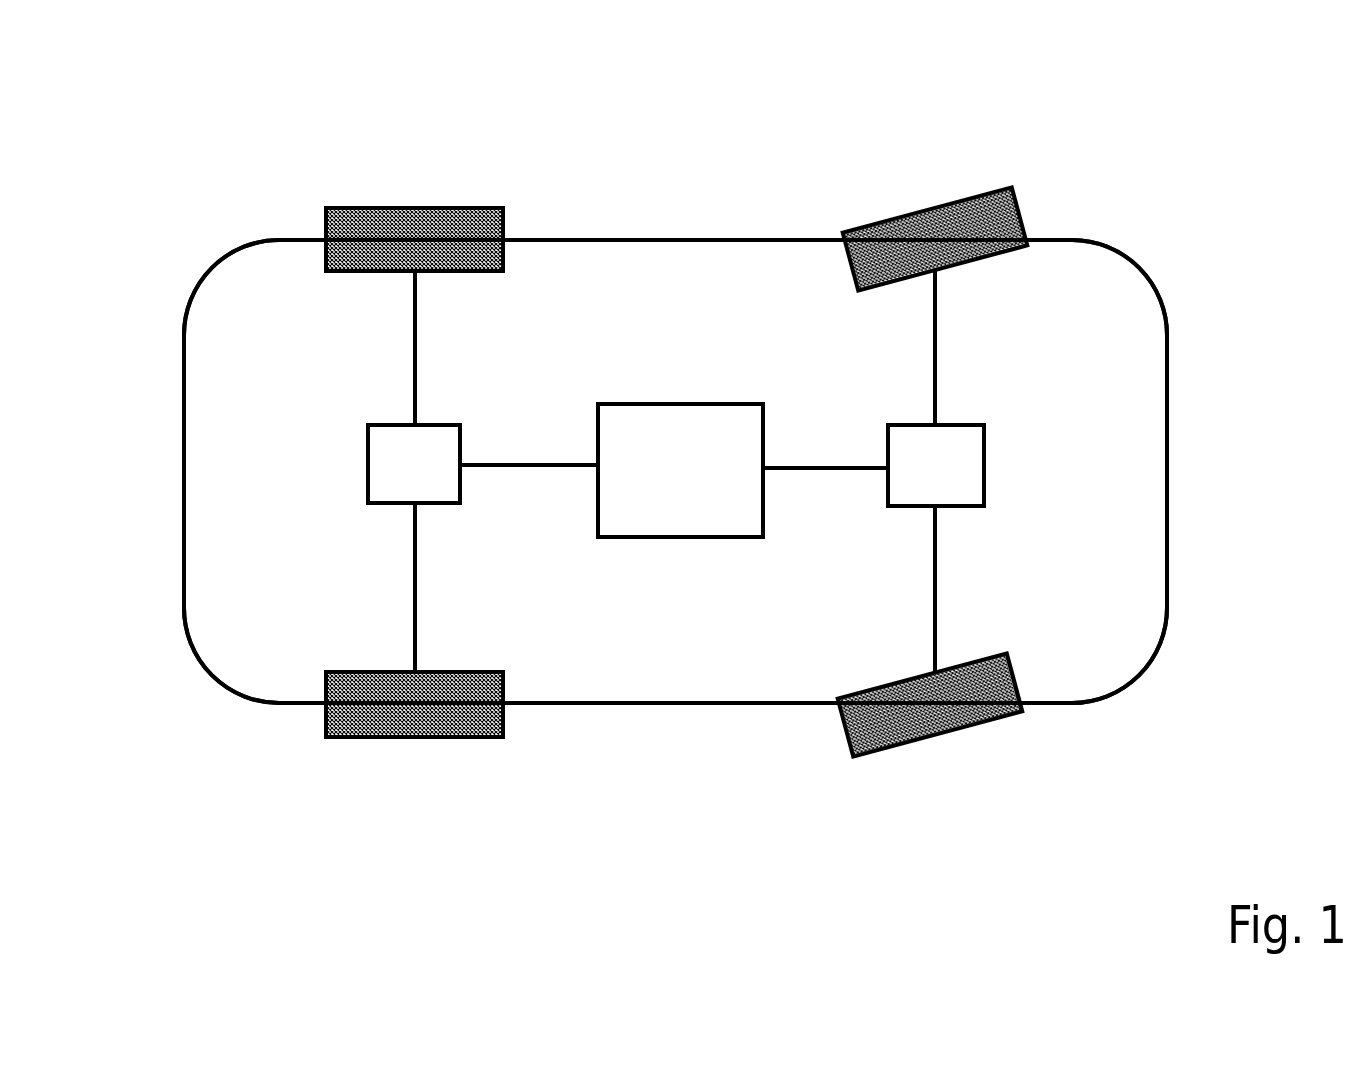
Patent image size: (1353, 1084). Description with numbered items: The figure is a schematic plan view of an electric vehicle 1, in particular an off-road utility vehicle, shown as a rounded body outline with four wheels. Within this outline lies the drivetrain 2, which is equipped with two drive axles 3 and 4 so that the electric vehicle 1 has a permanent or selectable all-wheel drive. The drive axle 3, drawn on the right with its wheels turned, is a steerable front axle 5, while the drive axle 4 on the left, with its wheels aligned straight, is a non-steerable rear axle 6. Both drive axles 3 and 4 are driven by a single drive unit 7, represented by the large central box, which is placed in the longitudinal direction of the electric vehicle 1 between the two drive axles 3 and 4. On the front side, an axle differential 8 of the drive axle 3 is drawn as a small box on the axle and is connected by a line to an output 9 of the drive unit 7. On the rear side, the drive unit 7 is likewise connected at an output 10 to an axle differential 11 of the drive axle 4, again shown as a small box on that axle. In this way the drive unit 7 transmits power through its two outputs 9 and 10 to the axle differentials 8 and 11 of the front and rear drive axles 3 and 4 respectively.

The electric vehicle 1 is at (196, 150).
The drivetrain 2 is at (734, 322).
The drive axle 3 is at (962, 357).
The drive axle 4 is at (392, 578).
The steerable front axle 5 is at (935, 573).
The non-steerable rear axle 6 is at (415, 680).
The drive unit 7 is at (682, 435).
The axle differential 8 is at (950, 473).
The output 9 is at (770, 480).
The output 10 is at (585, 478).
The axle differential 11 is at (400, 465).